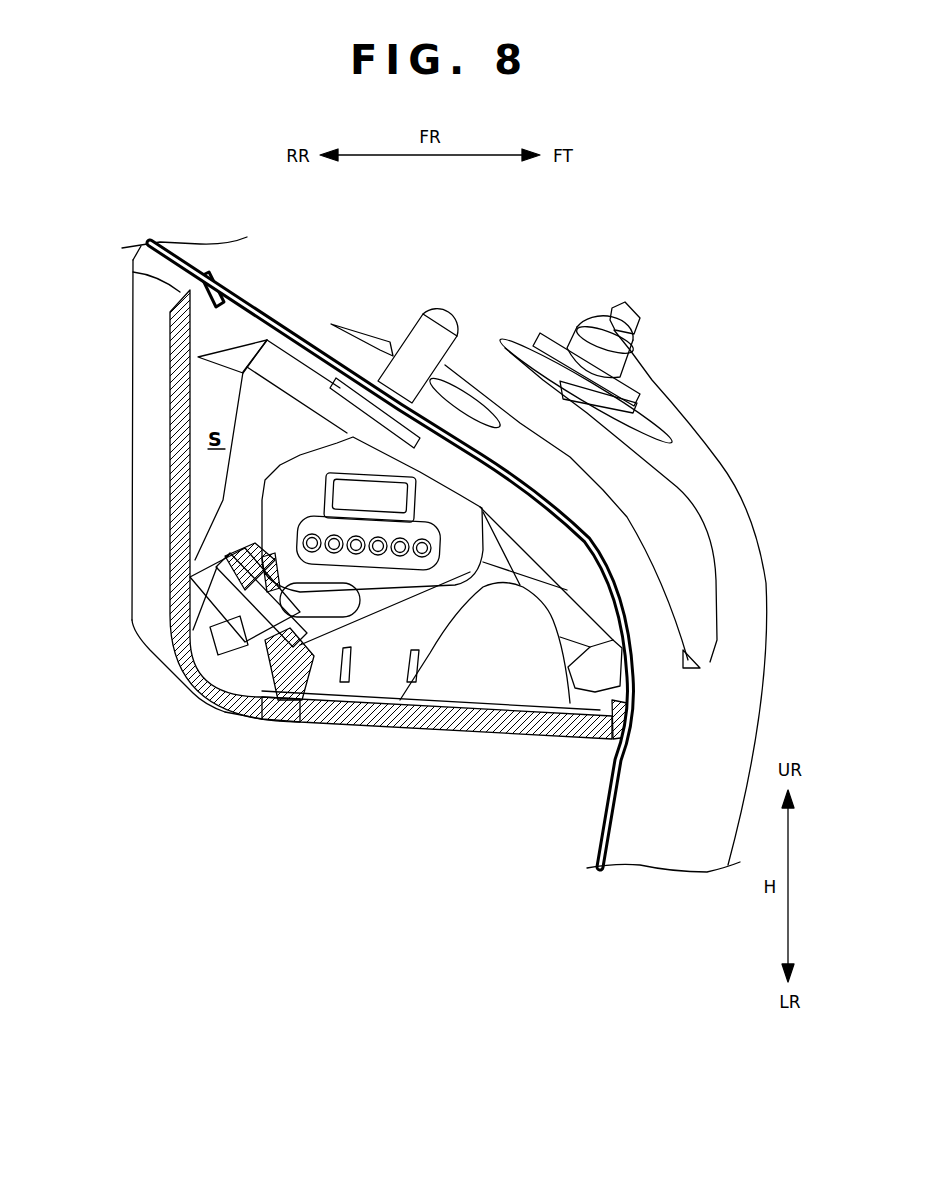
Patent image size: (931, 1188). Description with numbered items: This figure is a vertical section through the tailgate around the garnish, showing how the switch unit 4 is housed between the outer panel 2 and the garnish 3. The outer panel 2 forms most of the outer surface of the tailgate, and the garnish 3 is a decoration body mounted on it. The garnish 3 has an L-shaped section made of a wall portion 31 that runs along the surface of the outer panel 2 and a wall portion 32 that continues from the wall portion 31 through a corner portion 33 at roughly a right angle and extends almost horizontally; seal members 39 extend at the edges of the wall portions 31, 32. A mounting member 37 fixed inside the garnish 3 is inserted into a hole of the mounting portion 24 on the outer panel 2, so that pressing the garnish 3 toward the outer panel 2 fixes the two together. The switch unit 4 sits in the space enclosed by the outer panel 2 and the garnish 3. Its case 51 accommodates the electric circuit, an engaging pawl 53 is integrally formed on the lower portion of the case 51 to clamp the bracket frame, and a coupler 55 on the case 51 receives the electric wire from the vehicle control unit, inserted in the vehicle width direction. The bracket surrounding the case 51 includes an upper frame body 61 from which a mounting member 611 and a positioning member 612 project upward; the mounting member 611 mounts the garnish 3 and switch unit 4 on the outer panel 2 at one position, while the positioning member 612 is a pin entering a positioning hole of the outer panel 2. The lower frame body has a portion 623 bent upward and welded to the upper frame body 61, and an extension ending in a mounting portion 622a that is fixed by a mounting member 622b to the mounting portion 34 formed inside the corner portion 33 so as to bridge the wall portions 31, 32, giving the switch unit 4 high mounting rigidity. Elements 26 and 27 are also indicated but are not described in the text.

The outer panel 2 is at (717, 487).
The garnish 3 is at (116, 264).
The switch unit 4 is at (288, 365).
The mounting portion 24 is at (567, 330).
The rib 26 is at (376, 328).
The edge seal 27 is at (362, 370).
The wall portion 31 is at (150, 470).
The wall portion 32 is at (517, 738).
The corner portion 33 is at (182, 686).
The mounting portion 34 is at (233, 715).
The mounting member 37 is at (628, 313).
The seal member 39 is at (213, 283).
The case 51 is at (430, 638).
The engaging pawl 53 is at (383, 680).
The coupler 55 is at (287, 530).
The upper frame body 61 is at (242, 483).
The mounting member 611 is at (460, 327).
The positioning member 612 is at (430, 317).
The mounting portion 622a is at (308, 658).
The mounting member 622b is at (197, 640).
The bent portion 623 is at (480, 687).